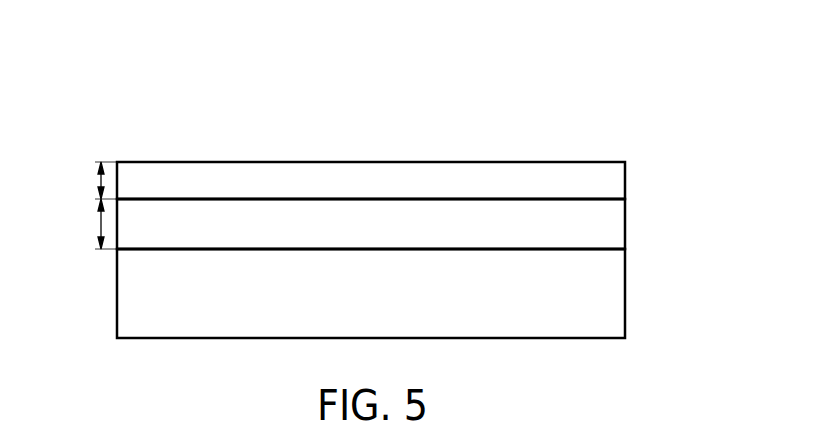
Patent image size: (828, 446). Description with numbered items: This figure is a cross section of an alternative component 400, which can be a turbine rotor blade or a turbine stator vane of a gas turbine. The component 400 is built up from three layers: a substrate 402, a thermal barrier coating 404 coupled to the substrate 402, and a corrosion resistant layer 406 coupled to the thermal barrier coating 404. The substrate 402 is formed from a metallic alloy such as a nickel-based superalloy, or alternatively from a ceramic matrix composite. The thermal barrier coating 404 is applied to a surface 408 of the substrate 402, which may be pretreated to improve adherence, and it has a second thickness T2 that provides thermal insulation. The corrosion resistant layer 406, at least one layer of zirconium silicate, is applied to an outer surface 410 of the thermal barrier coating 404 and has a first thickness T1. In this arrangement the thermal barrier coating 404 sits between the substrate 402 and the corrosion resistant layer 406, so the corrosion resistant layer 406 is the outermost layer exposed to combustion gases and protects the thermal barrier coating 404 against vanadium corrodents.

The component 400 is at (380, 184).
The substrate 402 is at (630, 302).
The thermal barrier coating 404 is at (630, 229).
The corrosion resistant layer 406 is at (630, 179).
The surface of substrate 408 is at (162, 251).
The outer surface of thermal barrier coating 410 is at (522, 198).
The first thickness T1 is at (97, 178).
The second thickness T2 is at (97, 220).